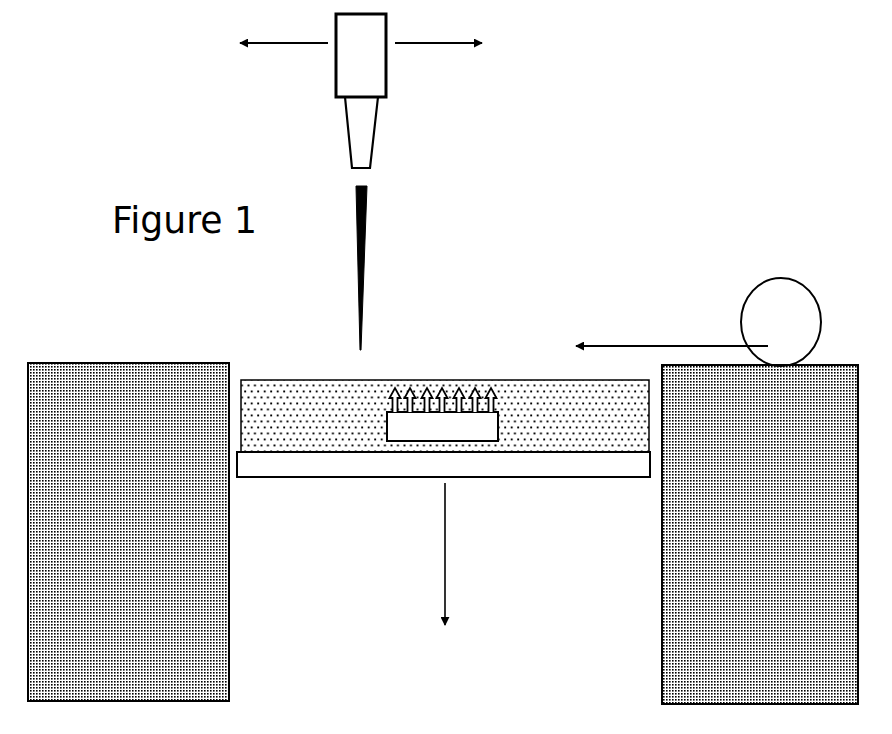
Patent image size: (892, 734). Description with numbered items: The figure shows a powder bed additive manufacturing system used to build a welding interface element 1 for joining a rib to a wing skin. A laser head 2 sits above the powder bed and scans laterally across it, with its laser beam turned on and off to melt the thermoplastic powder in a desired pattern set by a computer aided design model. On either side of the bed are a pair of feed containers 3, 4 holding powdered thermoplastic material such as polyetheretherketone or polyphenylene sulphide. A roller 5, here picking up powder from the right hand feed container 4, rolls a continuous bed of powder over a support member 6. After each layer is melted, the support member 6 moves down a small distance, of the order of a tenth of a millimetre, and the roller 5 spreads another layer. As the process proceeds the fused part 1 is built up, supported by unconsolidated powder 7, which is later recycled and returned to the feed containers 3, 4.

The welding interface element 1 is at (458, 376).
The laser head 2 is at (342, 72).
The feed container 3 is at (223, 612).
The feed container 4 is at (668, 617).
The roller 5 is at (764, 296).
The support member 6 is at (362, 468).
The unconsolidated powder 7 is at (627, 411).